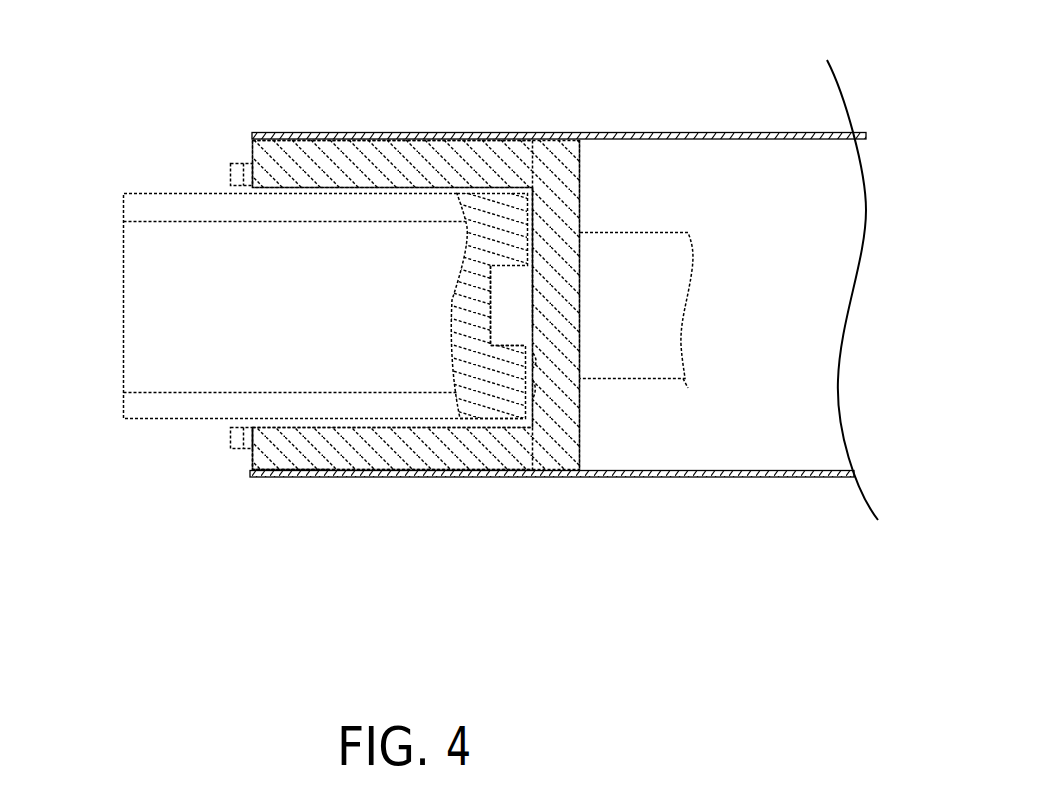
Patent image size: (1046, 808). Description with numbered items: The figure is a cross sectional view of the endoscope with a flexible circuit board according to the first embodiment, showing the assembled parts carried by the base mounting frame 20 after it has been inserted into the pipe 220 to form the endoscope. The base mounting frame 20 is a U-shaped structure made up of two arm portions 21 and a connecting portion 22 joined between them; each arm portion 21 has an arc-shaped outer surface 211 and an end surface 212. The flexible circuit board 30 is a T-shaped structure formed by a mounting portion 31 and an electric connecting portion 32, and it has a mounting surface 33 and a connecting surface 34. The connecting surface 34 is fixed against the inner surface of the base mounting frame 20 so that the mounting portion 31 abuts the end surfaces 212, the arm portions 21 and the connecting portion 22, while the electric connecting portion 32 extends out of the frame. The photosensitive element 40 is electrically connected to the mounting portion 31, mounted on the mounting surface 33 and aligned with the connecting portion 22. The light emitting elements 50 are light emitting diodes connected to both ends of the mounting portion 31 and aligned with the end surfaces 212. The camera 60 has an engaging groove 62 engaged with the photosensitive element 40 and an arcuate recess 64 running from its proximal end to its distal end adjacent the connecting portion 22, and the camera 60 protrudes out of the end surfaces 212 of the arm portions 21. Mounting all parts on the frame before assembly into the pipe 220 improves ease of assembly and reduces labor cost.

The base mounting frame 20 is at (334, 125).
The arm portion 21 is at (360, 162).
The arc-shaped outer surface 211 is at (308, 470).
The end surface 212 is at (252, 461).
The connecting portion 22 is at (557, 307).
The pipe 220 is at (632, 132).
The flexible circuit board 30 is at (500, 170).
The mounting portion 31 is at (532, 220).
The electric connecting portion 32 is at (650, 247).
The mounting surface 33 is at (527, 393).
The connecting surface 34 is at (531, 360).
The photosensitive element 40 is at (507, 358).
The light emitting element 50 is at (212, 162).
The camera 60 is at (287, 312).
The engaging groove 62 is at (485, 330).
The arcuate recess 64 is at (137, 268).